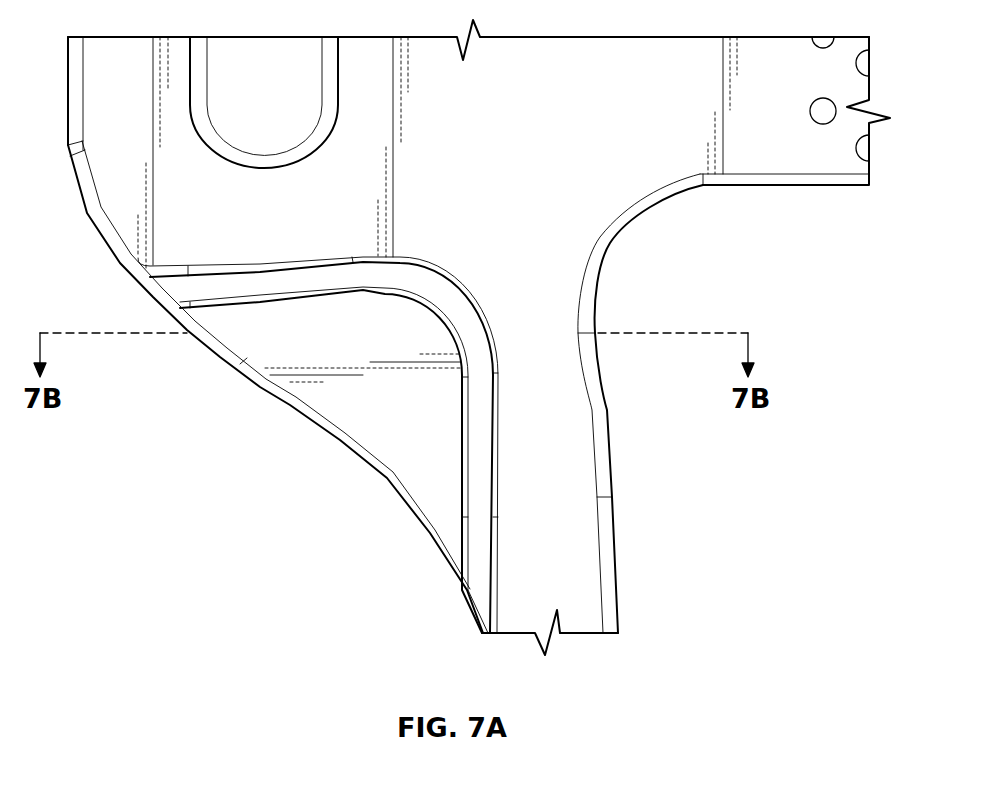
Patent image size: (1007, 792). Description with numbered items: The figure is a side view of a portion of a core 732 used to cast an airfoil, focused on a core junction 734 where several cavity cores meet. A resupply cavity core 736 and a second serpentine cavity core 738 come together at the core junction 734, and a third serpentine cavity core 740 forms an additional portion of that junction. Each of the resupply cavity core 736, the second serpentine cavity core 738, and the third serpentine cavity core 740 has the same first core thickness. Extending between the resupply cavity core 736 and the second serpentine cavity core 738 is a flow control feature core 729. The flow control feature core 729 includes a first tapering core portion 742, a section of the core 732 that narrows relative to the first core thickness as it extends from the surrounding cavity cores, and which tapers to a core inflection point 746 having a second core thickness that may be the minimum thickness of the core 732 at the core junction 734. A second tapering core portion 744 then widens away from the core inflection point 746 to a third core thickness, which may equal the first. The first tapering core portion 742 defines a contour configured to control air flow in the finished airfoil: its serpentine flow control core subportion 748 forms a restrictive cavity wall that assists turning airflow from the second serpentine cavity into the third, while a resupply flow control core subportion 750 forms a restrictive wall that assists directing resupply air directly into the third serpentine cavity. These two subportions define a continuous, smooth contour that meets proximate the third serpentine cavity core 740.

The flow control feature core 729 is at (388, 476).
The core 732 is at (603, 252).
The core junction 734 is at (437, 217).
The resupply cavity core 736 is at (580, 590).
The second serpentine cavity core 738 is at (138, 90).
The third serpentine cavity core 740 is at (545, 92).
The first tapering core portion 742 is at (250, 276).
The second tapering core portion 744 is at (360, 408).
The core inflection point 746 is at (363, 296).
The serpentine flow control core subportion 748 is at (483, 257).
The resupply flow control core subportion 750 is at (502, 268).